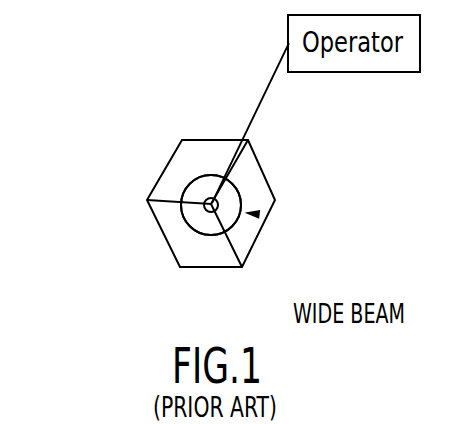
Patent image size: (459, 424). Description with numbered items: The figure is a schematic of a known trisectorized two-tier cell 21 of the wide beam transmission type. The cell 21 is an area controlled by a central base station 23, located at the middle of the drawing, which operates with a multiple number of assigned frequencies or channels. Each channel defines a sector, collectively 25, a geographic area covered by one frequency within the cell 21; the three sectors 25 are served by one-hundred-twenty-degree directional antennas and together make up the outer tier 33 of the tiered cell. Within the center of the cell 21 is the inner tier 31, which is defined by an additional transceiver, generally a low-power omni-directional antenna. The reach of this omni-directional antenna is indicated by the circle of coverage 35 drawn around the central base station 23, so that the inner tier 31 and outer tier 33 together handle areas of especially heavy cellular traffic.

The cell 21 is at (125, 138).
The central base station 23 is at (230, 200).
The sector 25 is at (211, 158).
The inner tier 31 is at (197, 232).
The outer tier 33 is at (260, 214).
The circle of coverage 35 is at (181, 184).